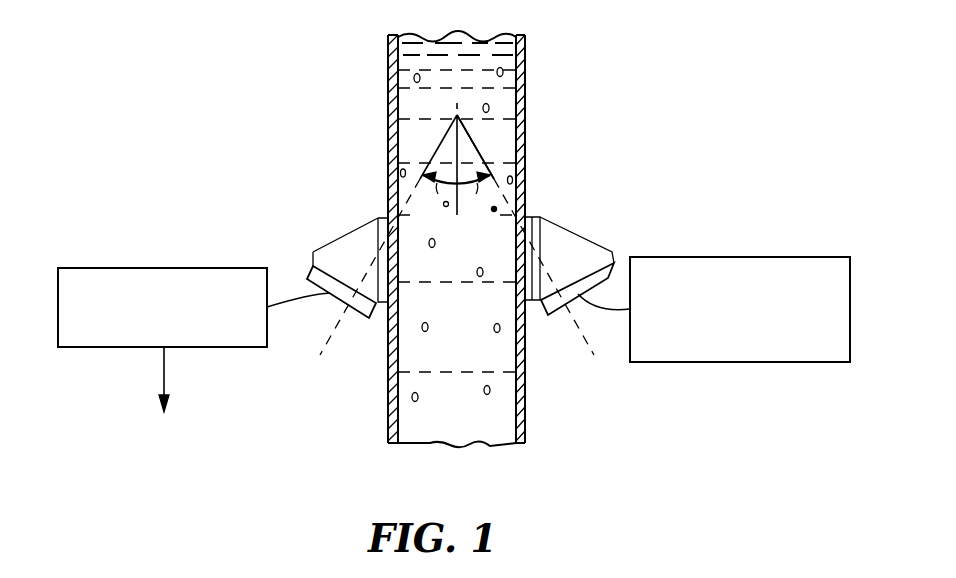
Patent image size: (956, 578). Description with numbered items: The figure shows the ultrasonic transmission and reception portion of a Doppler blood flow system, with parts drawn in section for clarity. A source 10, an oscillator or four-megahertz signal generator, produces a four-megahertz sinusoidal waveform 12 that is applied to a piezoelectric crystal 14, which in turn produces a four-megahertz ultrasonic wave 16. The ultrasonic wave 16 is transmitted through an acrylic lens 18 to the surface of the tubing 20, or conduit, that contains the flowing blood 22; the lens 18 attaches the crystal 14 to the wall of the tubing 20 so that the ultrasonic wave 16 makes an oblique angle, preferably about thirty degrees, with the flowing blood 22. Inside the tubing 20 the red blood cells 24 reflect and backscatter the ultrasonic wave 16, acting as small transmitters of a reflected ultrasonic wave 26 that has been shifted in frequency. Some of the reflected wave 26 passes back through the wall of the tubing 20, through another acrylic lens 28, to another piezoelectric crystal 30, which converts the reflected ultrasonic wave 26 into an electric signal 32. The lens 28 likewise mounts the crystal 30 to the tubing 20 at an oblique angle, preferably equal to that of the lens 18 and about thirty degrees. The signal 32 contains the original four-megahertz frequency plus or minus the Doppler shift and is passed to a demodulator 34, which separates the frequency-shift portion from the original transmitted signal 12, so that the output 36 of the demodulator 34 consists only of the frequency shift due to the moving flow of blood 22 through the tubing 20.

The source 10 is at (798, 256).
The sinusoidal waveform 12 is at (612, 310).
The piezoelectric crystal 14 is at (617, 259).
The ultrasonic wave 16 is at (478, 148).
The acrylic lens 18 is at (533, 216).
The tubing 20 is at (527, 82).
The flowing blood 22 is at (408, 37).
The red blood cells 24 is at (496, 74).
The reflected ultrasonic wave 26 is at (438, 148).
The acrylic lens 28 is at (378, 215).
The piezoelectric crystal 30 is at (307, 277).
The electric signal 32 is at (289, 304).
The demodulator 34 is at (153, 267).
The output 36 is at (162, 392).